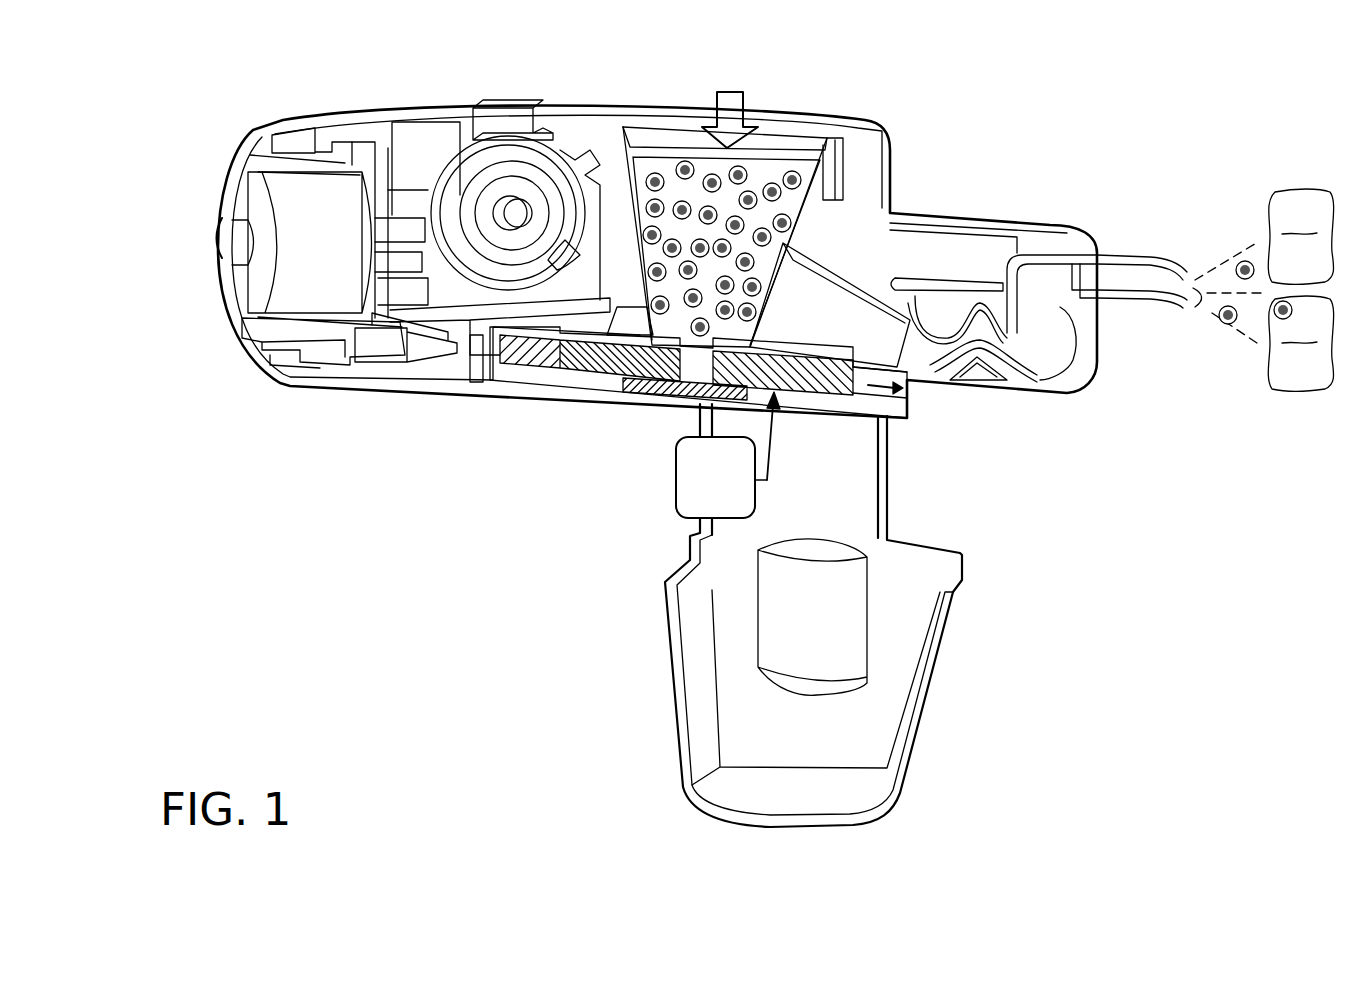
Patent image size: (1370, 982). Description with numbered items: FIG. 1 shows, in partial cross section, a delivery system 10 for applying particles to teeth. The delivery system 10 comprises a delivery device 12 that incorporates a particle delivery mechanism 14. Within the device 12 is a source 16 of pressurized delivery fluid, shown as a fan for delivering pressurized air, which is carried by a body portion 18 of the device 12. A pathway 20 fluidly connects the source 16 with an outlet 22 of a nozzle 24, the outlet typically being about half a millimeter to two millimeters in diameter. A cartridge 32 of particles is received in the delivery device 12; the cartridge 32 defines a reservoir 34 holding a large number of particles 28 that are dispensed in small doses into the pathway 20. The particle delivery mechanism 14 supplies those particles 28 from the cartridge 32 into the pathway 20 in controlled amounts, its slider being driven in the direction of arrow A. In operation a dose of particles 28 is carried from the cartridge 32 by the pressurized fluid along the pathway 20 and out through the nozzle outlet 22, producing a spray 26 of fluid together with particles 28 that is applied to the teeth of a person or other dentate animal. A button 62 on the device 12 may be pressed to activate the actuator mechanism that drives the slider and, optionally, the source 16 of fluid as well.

The delivery system 10 is at (775, 428).
The delivery device 12 is at (398, 185).
The particle delivery mechanism 14 is at (917, 378).
The source of pressurized delivery fluid 16 is at (312, 325).
The body portion 18 is at (430, 345).
The pathway 20 is at (1050, 347).
The outlet 22 is at (1193, 303).
The nozzle 24 is at (1133, 257).
The spray 26 is at (1220, 262).
The particles 28 is at (1222, 327).
The cartridge 32 is at (660, 150).
The reservoir 34 is at (633, 163).
The button 62 is at (676, 478).
The arrow (direction of slider travel) A is at (857, 415).